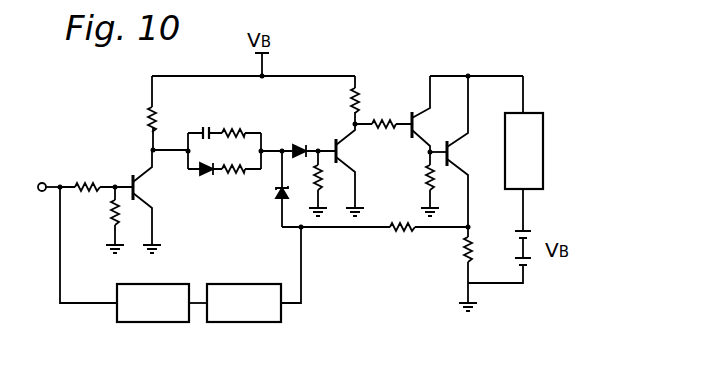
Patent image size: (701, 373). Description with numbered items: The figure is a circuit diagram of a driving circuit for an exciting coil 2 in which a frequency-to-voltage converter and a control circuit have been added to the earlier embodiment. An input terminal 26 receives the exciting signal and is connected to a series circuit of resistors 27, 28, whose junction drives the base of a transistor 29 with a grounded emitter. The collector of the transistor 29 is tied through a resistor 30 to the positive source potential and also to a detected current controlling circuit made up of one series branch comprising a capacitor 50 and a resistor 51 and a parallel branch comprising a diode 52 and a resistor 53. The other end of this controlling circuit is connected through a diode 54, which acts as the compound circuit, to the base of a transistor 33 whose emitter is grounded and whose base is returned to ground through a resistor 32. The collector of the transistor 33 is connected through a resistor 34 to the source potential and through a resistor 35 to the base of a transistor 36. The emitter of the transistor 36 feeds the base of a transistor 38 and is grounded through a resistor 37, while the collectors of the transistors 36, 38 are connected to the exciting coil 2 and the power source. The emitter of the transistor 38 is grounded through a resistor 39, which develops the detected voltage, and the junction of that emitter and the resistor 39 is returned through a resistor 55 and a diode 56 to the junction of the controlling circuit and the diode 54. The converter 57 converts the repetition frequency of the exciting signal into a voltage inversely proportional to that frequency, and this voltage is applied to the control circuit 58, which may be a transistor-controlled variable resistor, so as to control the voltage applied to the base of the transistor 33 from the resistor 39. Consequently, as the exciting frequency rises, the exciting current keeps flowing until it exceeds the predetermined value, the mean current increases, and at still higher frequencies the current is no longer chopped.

The exciting coil 2 is at (546, 152).
The input terminal 26 is at (43, 182).
The resistor 27 is at (88, 183).
The resistor 28 is at (111, 216).
The transistor 29 is at (148, 186).
The resistor 30 is at (147, 111).
The resistor 32 is at (321, 178).
The transistor 33 is at (349, 158).
The resistor 34 is at (361, 101).
The resistor 35 is at (386, 130).
The transistor 36 is at (425, 122).
The resistor 37 is at (425, 180).
The transistor 38 is at (458, 152).
The resistor 39 is at (472, 260).
The capacitor 50 is at (200, 123).
The resistor 51 is at (233, 128).
The diode 52 is at (204, 178).
The resistor 53 is at (233, 177).
The diode 54 is at (297, 145).
The resistor 55 is at (400, 232).
The diode 56 is at (280, 200).
The converter (FV) 57 is at (160, 323).
The control circuit (VR) 58 is at (254, 323).